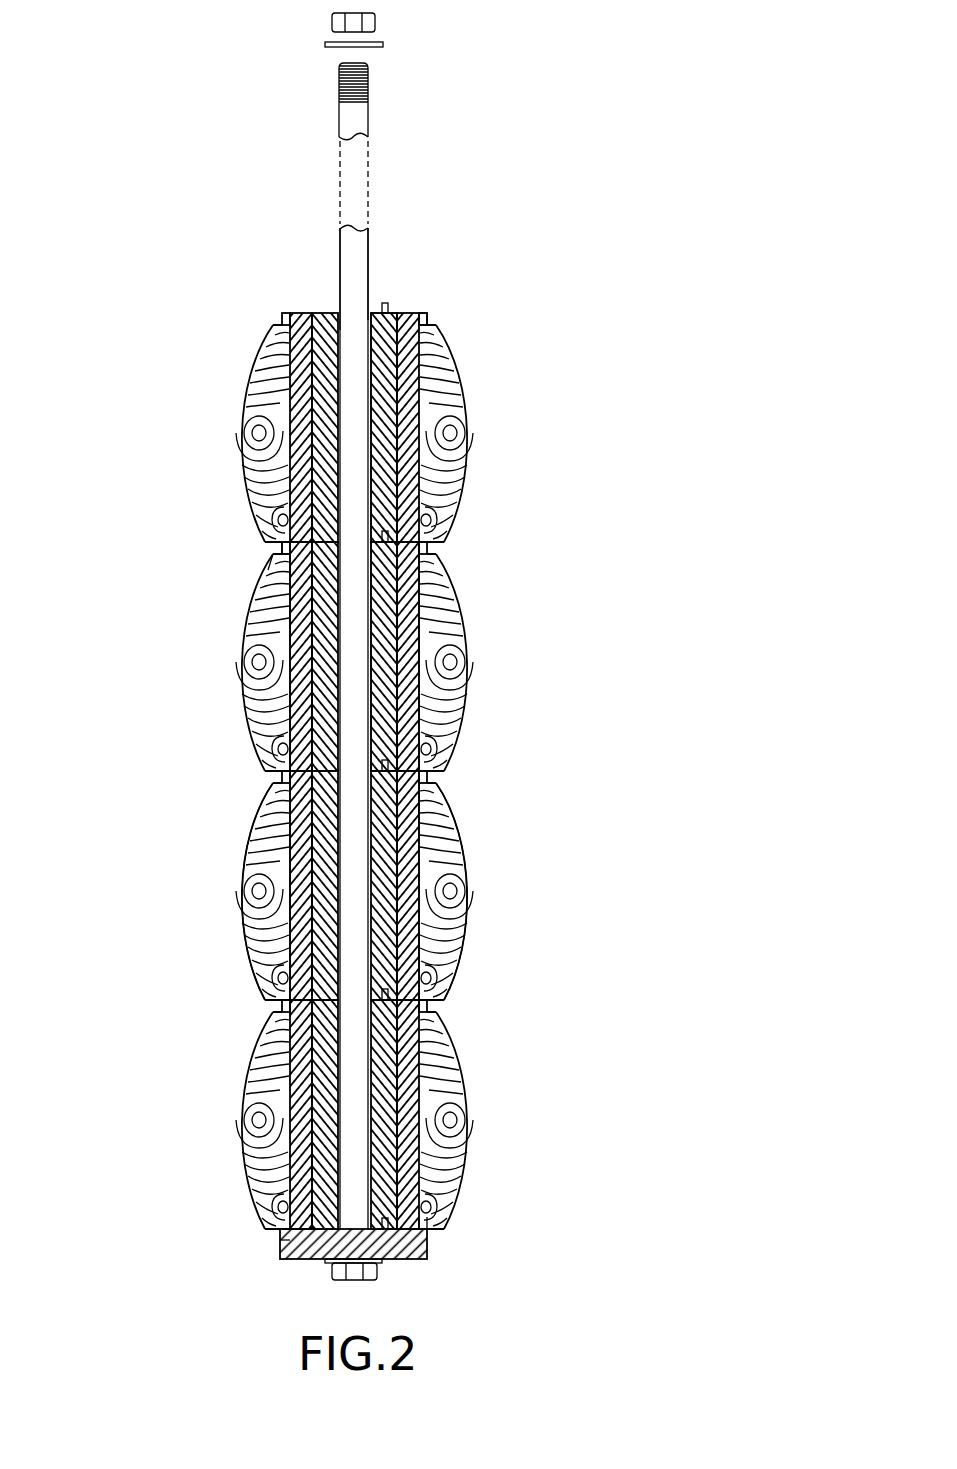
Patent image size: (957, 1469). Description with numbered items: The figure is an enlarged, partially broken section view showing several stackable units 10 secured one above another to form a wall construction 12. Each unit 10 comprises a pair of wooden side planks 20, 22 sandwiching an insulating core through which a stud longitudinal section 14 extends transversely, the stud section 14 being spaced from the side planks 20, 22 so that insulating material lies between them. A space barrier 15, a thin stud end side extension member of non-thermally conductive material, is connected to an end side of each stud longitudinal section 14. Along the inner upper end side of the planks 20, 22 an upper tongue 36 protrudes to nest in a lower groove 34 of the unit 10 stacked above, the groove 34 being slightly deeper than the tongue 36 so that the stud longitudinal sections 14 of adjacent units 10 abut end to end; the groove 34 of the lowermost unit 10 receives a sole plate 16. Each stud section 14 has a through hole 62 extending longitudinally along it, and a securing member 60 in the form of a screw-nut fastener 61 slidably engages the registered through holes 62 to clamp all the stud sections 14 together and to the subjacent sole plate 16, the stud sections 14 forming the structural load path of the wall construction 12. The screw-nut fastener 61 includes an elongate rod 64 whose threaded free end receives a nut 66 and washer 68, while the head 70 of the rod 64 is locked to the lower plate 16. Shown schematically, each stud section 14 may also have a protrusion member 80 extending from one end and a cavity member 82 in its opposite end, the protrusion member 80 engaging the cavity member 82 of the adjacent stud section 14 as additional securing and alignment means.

The stackable unit 10 is at (475, 430).
The wall construction 12 is at (100, 198).
The stud longitudinal section 14 is at (390, 593).
The space barrier 15 is at (287, 827).
The sole plate 16 is at (313, 1240).
The first side plank 20 is at (263, 1033).
The second side plank 22 is at (448, 1033).
The lower groove 34 is at (287, 555).
The upper tongue 36 is at (430, 316).
The securing member 60 is at (364, 664).
The screw-nut fastener 61 is at (375, 283).
The through hole 62 is at (340, 330).
The elongate rod 64 is at (368, 247).
The nut 66 is at (378, 22).
The washer 68 is at (383, 45).
The head 70 is at (358, 1282).
The protrusion member 80 is at (389, 306).
The cavity member 82 is at (430, 1221).